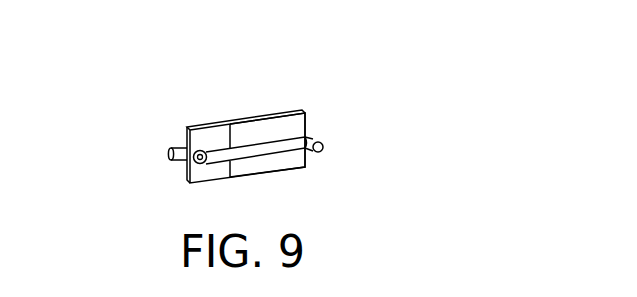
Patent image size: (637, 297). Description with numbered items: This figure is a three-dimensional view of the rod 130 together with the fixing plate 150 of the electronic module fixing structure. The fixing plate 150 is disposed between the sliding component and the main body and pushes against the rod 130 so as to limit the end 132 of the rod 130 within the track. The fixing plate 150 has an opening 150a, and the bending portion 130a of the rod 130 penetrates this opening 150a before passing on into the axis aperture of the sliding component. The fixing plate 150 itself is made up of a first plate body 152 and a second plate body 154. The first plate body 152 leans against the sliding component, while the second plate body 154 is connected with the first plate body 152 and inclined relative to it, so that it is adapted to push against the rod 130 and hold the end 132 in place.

The fixing plate 150 is at (287, 77).
The first plate body 152 is at (210, 134).
The second plate body 154 is at (253, 132).
The opening 150a is at (197, 138).
The rod 130 is at (252, 155).
The bending portion 130a is at (203, 163).
The end 132 is at (318, 154).